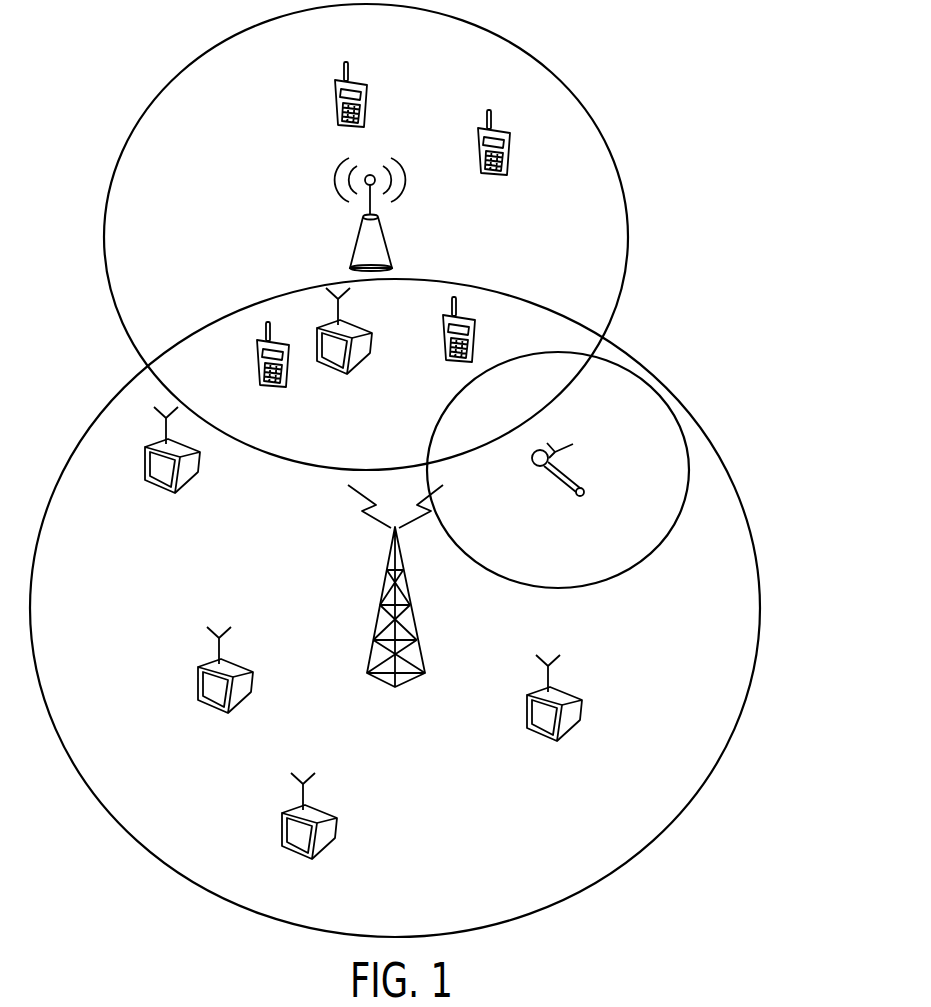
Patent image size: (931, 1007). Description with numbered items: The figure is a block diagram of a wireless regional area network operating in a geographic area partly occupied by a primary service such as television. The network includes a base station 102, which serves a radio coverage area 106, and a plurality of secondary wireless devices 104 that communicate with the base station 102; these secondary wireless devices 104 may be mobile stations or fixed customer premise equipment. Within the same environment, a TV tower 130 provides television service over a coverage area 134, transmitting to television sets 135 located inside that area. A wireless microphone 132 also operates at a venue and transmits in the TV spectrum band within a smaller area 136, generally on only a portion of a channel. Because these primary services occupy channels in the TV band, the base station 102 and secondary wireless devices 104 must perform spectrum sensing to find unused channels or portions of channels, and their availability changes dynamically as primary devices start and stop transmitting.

The base station 102 is at (352, 241).
The secondary wireless devices 104 is at (365, 128).
The radio coverage area 106 is at (626, 207).
The TV tower 130 is at (382, 597).
The wireless microphone 132 is at (585, 482).
The coverage area 134 is at (741, 718).
The television sets 135 is at (348, 372).
The area 136 is at (572, 588).